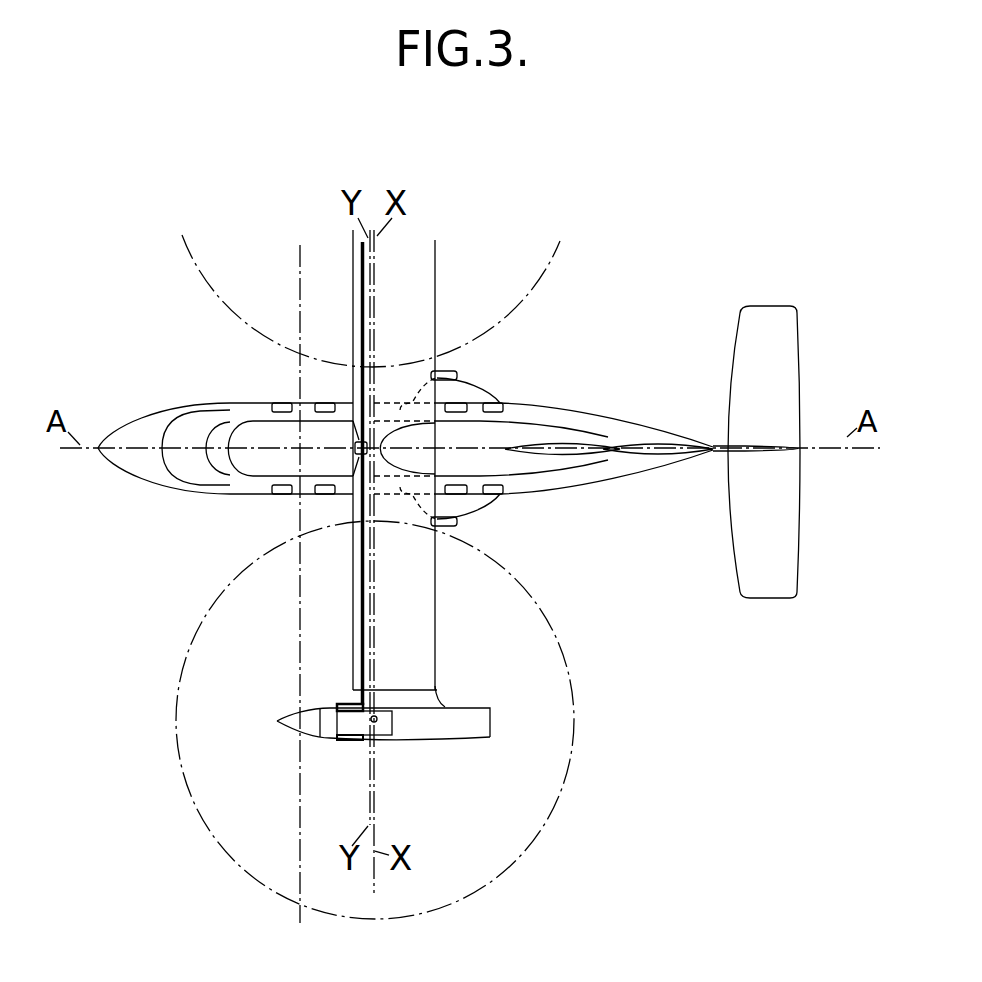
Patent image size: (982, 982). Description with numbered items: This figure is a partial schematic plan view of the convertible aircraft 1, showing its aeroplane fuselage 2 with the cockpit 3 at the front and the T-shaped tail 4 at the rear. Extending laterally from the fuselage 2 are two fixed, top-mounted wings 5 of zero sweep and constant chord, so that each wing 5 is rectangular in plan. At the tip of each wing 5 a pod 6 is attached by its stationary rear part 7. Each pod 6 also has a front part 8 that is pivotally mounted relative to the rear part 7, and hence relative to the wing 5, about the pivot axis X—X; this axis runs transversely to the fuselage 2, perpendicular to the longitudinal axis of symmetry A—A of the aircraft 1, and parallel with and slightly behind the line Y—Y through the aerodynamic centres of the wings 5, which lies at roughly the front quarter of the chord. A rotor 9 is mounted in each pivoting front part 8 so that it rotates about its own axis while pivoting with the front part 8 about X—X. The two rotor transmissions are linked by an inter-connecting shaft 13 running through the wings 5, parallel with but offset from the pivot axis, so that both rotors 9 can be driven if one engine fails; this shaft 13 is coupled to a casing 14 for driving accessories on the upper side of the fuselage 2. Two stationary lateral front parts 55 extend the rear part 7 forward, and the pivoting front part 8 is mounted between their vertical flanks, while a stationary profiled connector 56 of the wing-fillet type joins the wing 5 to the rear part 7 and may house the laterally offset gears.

The convertible aircraft 1 is at (168, 582).
The aeroplane fuselage 2 is at (543, 410).
The cockpit 3 is at (150, 428).
The T-shaped tail 4 is at (752, 521).
The wing 5 is at (423, 289).
The pod 6 is at (417, 741).
The rear part of the pod 7 is at (467, 713).
The front part of the pod 8 is at (340, 718).
The rotor 9 is at (297, 778).
The inter-connecting shaft 13 is at (360, 292).
The casing for driving accessories 14 is at (355, 455).
The stationary lateral front part 55 is at (343, 703).
The stationary profiled connector 56 is at (412, 699).